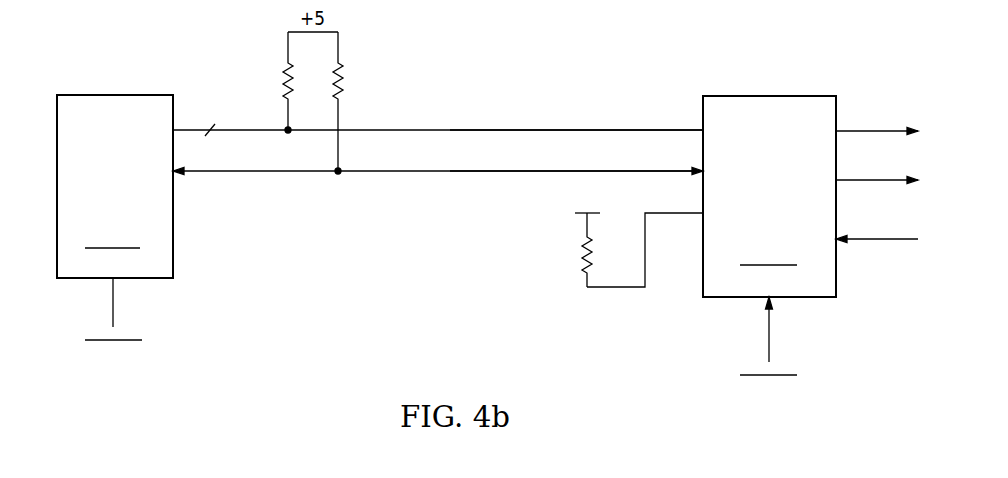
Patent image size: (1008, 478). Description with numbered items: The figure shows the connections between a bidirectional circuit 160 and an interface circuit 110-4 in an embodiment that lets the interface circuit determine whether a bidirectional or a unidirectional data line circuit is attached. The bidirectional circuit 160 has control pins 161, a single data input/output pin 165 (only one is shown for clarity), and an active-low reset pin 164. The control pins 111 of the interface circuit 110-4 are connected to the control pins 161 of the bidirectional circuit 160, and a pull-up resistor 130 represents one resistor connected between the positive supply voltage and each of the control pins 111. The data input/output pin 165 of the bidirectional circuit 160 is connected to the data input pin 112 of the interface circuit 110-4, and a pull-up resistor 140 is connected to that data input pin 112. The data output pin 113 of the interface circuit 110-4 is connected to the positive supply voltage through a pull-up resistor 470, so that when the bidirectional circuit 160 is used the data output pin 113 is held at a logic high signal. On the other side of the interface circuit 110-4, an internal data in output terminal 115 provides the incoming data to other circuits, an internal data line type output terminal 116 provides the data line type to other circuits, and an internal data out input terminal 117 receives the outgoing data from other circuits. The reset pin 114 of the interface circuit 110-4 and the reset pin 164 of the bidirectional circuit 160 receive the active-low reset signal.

The bidirectional circuit 160 is at (128, 93).
The control pins 161 is at (241, 128).
The data input/output pin 165 is at (241, 169).
The pull-up resistor 130 is at (283, 73).
The pull-up resistor 140 is at (351, 76).
The reset pin 164 is at (113, 294).
The interface circuit 110-4 is at (778, 94).
The control pins 111 is at (664, 128).
The data input pin 112 is at (664, 169).
The data output pin 113 is at (664, 211).
The pull-up resistor 470 is at (580, 247).
The internal data in output terminal 115 is at (870, 128).
The internal data line type output terminal 116 is at (870, 177).
The internal data out input terminal 117 is at (870, 236).
The reset pin 114 is at (770, 322).